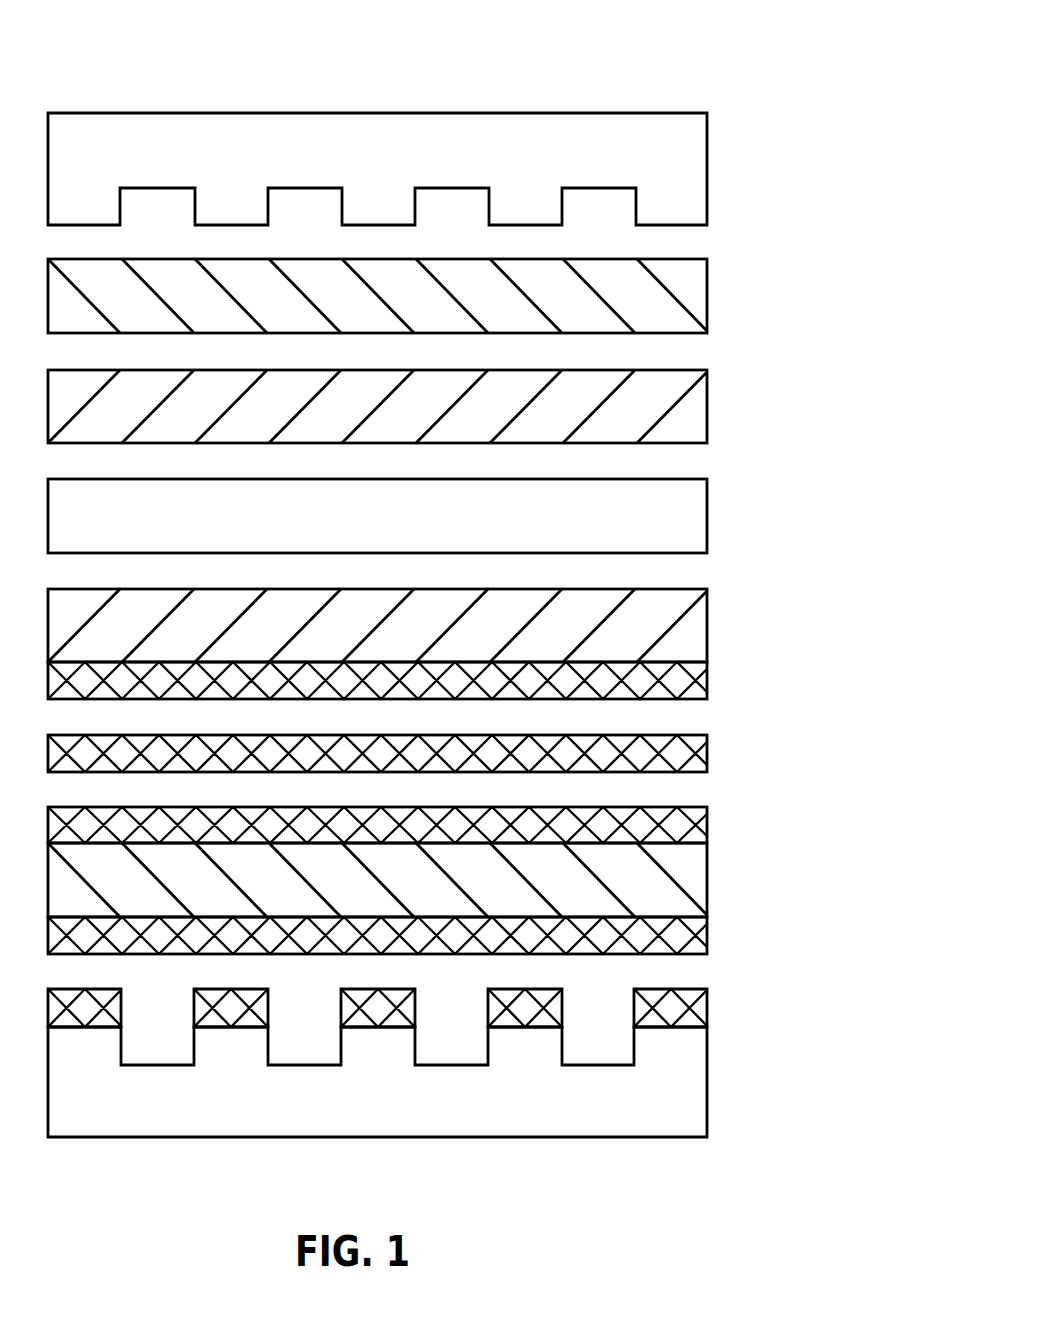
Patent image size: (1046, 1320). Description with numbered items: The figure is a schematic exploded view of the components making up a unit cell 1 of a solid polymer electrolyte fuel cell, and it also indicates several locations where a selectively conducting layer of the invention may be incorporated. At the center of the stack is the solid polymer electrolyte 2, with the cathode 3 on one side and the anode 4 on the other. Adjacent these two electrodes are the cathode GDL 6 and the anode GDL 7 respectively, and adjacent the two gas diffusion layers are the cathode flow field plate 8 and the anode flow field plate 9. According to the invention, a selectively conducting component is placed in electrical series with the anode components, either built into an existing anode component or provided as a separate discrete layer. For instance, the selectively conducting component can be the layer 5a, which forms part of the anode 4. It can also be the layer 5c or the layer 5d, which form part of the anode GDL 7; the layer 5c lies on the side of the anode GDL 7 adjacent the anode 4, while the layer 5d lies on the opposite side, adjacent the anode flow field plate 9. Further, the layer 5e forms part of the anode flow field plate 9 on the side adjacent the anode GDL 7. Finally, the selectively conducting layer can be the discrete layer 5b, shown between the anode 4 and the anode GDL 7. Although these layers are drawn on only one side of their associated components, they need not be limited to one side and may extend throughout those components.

The unit cell 1 is at (798, 70).
The solid polymer electrolyte 2 is at (670, 517).
The cathode 3 is at (688, 427).
The anode 4 is at (687, 642).
The layer 5a is at (692, 680).
The discrete layer 5b is at (692, 755).
The layer 5c is at (692, 827).
The layer 5d is at (692, 937).
The layer 5e is at (693, 1007).
The cathode GDL 6 is at (688, 280).
The anode GDL 7 is at (687, 880).
The cathode flow field plate 8 is at (672, 165).
The anode flow field plate 9 is at (687, 1103).